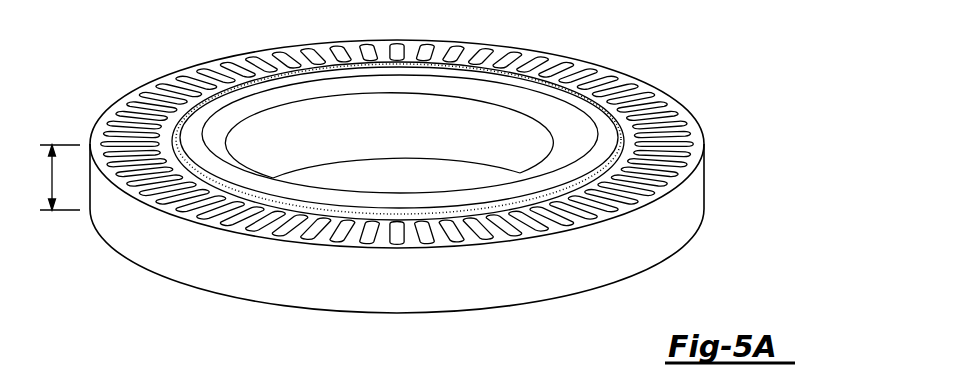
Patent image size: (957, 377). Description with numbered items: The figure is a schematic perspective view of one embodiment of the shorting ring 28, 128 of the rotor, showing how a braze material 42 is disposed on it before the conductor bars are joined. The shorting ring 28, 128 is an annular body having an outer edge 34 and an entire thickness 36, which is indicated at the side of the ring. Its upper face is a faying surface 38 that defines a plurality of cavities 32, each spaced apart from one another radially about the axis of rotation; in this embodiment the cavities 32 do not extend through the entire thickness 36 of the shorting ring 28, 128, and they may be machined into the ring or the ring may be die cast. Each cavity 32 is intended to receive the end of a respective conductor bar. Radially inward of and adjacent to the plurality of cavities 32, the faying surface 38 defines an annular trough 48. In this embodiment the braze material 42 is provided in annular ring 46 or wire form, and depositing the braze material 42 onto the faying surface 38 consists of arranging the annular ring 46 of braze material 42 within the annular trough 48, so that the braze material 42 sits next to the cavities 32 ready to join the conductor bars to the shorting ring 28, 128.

The shorting ring 28 is at (437, 176).
The shorting ring 128 is at (437, 176).
The cavities 32 is at (398, 258).
The outer edge 34 is at (543, 237).
The thickness 36 is at (49, 177).
The faying surface 38 is at (379, 236).
The braze material 42 is at (537, 76).
The annular ring 46 is at (496, 62).
The annular trough 48 is at (224, 117).